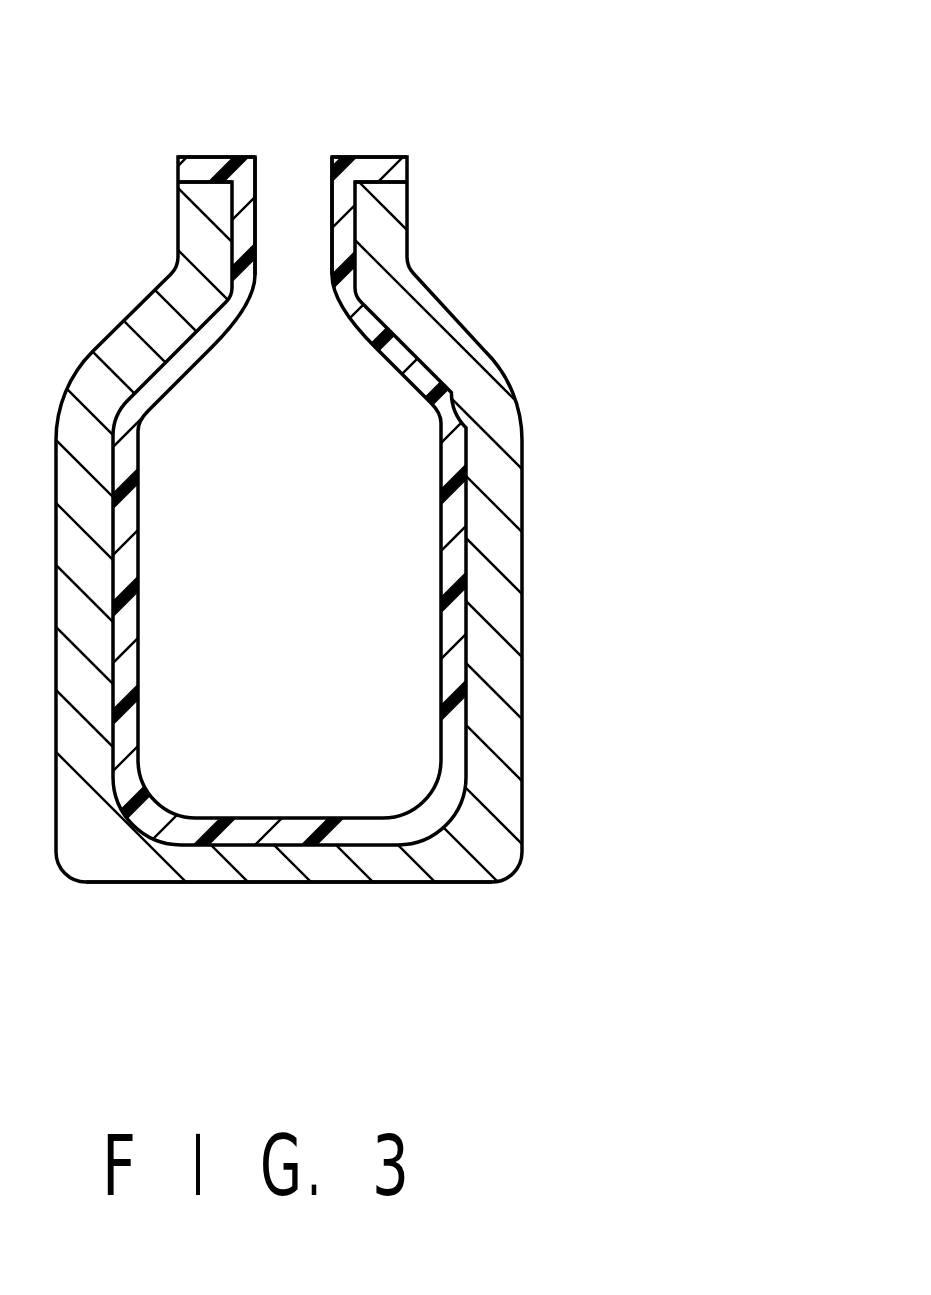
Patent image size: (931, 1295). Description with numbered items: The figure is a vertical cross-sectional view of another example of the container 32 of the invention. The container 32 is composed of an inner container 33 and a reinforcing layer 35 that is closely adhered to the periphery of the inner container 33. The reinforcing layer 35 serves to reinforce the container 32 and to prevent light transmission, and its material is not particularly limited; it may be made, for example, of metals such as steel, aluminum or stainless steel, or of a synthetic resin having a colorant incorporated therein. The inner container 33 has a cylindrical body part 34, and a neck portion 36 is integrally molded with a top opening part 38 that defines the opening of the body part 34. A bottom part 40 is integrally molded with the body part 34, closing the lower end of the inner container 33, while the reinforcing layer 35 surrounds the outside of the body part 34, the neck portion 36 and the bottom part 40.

The container 32 is at (472, 306).
The inner container 33 is at (430, 429).
The cylindrical body part 34 is at (442, 650).
The reinforcing layer 35 is at (507, 565).
The neck portion 36 is at (333, 272).
The top opening part 38 is at (292, 197).
The bottom part 40 is at (303, 812).